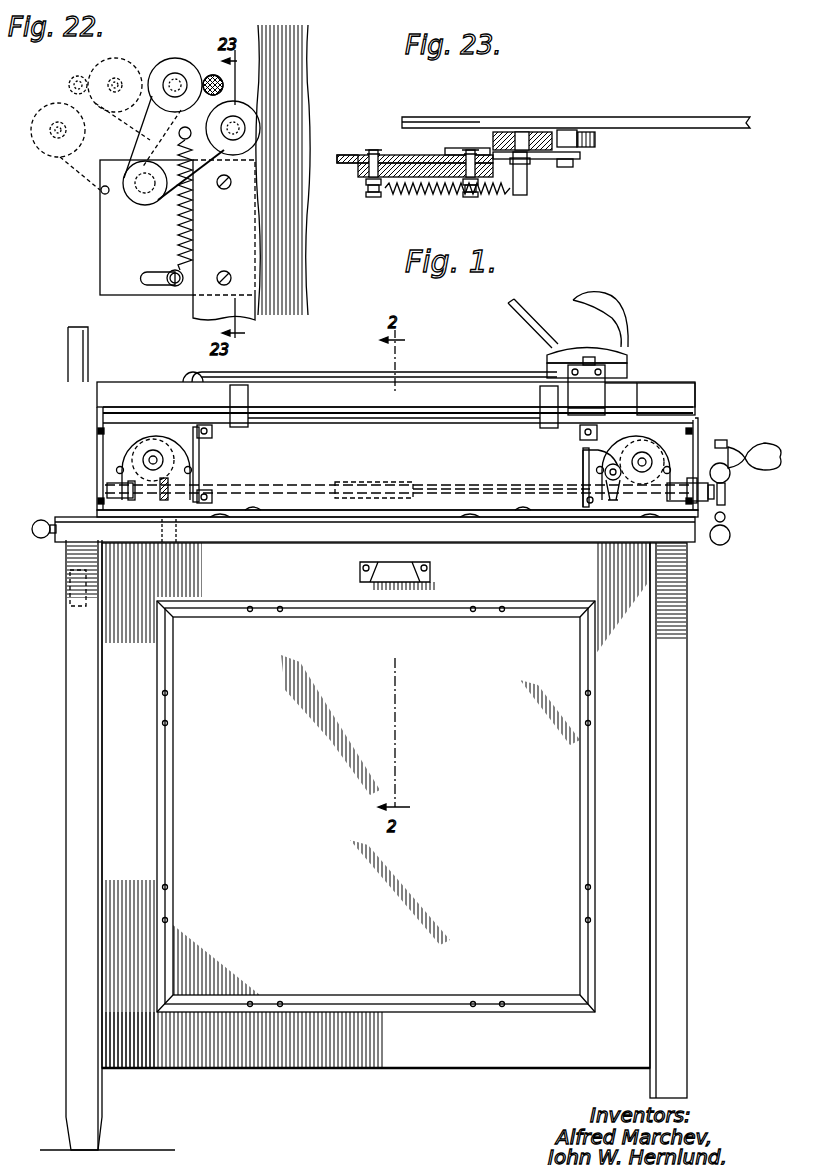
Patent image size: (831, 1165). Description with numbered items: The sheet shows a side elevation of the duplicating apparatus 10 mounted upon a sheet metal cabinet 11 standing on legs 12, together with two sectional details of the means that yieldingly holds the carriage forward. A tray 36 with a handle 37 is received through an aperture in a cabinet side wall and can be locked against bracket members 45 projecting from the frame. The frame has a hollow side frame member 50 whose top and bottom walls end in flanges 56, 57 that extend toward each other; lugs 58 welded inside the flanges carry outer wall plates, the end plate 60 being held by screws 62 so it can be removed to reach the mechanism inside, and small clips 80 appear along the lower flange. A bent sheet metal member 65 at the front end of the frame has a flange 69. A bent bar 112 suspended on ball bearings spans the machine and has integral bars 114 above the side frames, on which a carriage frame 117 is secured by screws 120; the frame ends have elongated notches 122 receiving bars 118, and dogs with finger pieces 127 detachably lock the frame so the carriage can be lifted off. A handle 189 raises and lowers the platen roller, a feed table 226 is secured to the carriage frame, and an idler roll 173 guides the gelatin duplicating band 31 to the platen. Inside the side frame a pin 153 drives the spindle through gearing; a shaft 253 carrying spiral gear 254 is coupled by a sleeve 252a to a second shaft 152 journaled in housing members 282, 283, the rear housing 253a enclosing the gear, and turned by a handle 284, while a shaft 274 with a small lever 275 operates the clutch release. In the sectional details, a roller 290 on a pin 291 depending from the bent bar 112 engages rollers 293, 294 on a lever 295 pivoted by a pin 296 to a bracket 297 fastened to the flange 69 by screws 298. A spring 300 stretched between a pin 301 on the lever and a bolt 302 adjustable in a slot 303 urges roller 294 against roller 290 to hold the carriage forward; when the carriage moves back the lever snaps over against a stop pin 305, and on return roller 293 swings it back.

In FIG. 1, the duplicating apparatus 10 is at (120, 380).
In FIG. 1, the cabinet 11 is at (643, 880).
In FIG. 1, the legs 12 is at (90, 1105).
In FIG. 1, the duplicating band 31 is at (286, 376).
In FIG. 1, the tray 36 is at (316, 586).
In FIG. 1, the handle 37 is at (400, 572).
In FIG. 1, the bracket members 45 is at (240, 395).
In FIG. 1, the side frame member 50 is at (320, 423).
In FIG. 1, the flange 56 is at (428, 423).
In FIG. 1, the flange 57 is at (447, 517).
In FIG. 1, the lugs 58 is at (112, 428).
In FIG. 1, the plate 60 is at (586, 457).
In FIG. 1, the screws 62 is at (200, 425).
In FIG. 22, the bent sheet metal member 65 is at (259, 60).
In FIG. 22, the flange 69 is at (200, 306).
In FIG. 23, the flange 69 is at (347, 155).
In FIG. 1, the clip 80 is at (245, 512).
In FIG. 23, the bent bar 112 is at (705, 124).
In FIG. 1, the bar 114 is at (607, 393).
In FIG. 1, the carriage frame 117 is at (548, 352).
In FIG. 1, the bar 118 is at (625, 368).
In FIG. 1, the screws 120 is at (576, 376).
In FIG. 1, the elongated notches 122 is at (550, 365).
In FIG. 1, the finger piece 127 is at (588, 357).
In FIG. 1, the shaft 152 is at (472, 490).
In FIG. 1, the pin 153 is at (646, 470).
In FIG. 1, the idler roll 173 is at (192, 380).
In FIG. 1, the handle 189 is at (602, 311).
In FIG. 1, the feed table 226 is at (514, 304).
In FIG. 1, the sleeve 252a is at (404, 479).
In FIG. 1, the shaft 253 is at (306, 480).
In FIG. 1, the housing 253a is at (125, 468).
In FIG. 1, the spiral gear 254 is at (165, 500).
In FIG. 1, the shaft 274 is at (605, 473).
In FIG. 1, the lever 275 is at (615, 485).
In FIG. 1, the housing member 282 is at (150, 460).
In FIG. 1, the housing member 283 is at (662, 446).
In FIG. 1, the handle 284 is at (726, 503).
In FIG. 22, the roller 290 is at (213, 74).
In FIG. 23, the roller 290 is at (566, 138).
In FIG. 22, the pin 291 is at (224, 85).
In FIG. 22, the roller 293 is at (100, 74).
In FIG. 23, the roller 293 is at (503, 132).
In FIG. 22, the roller 294 is at (163, 62).
In FIG. 23, the roller 294 is at (596, 143).
In FIG. 22, the lever 295 is at (201, 163).
In FIG. 23, the lever 295 is at (581, 156).
In FIG. 22, the pin 296 is at (142, 186).
In FIG. 23, the pin 296 is at (462, 148).
In FIG. 22, the bracket 297 is at (110, 252).
In FIG. 23, the bracket 297 is at (360, 170).
In FIG. 22, the screws 298 is at (232, 263).
In FIG. 23, the screws 298 is at (374, 150).
In FIG. 22, the spring 300 is at (177, 230).
In FIG. 23, the spring 300 is at (455, 194).
In FIG. 22, the pin 301 is at (179, 133).
In FIG. 23, the pin 301 is at (528, 176).
In FIG. 22, the bolt 302 is at (169, 283).
In FIG. 23, the bolt 302 is at (375, 196).
In FIG. 22, the slot 303 is at (140, 278).
In FIG. 22, the pin 305 is at (101, 192).